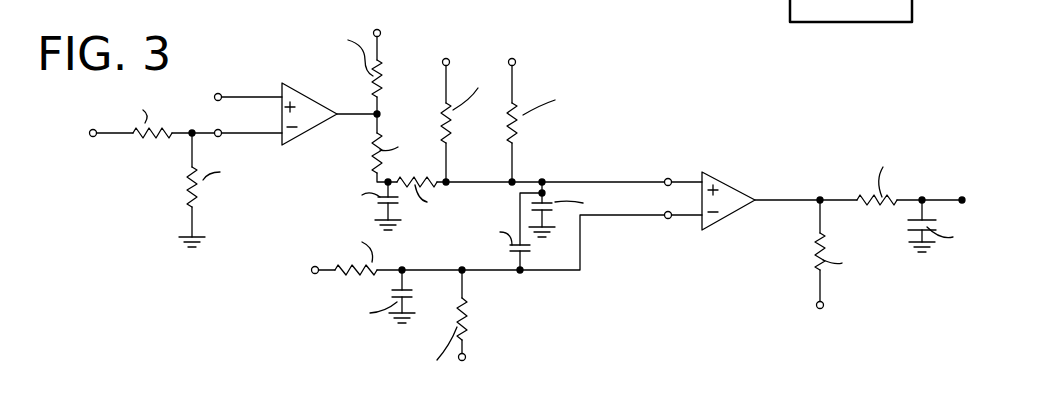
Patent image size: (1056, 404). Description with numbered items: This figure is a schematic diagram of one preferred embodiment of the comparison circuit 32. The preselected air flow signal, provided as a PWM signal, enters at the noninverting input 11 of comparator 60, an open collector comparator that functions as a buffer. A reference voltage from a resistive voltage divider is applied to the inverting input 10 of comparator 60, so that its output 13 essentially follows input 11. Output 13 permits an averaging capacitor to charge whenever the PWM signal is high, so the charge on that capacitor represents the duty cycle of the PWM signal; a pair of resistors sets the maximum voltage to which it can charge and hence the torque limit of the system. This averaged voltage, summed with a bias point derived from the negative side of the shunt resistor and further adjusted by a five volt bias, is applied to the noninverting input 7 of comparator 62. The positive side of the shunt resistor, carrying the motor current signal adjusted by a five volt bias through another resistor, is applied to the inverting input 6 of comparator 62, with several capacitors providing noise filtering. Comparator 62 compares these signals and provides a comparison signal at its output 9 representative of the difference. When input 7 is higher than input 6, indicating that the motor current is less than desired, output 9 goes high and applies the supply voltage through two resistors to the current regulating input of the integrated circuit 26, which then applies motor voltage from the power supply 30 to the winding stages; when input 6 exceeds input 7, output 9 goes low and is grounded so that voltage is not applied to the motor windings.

The integrated circuit 26 is at (611, 0).
The power supply 30 is at (838, 23).
The comparison circuit 32 is at (210, 298).
The comparator 60 is at (308, 133).
The comparator 62 is at (713, 177).
The inverting input 10 is at (237, 126).
The noninverting input 11 is at (221, 93).
The output 13 is at (358, 104).
The noninverting input 7 is at (684, 173).
The inverting input 6 is at (684, 207).
The output 9 is at (787, 189).